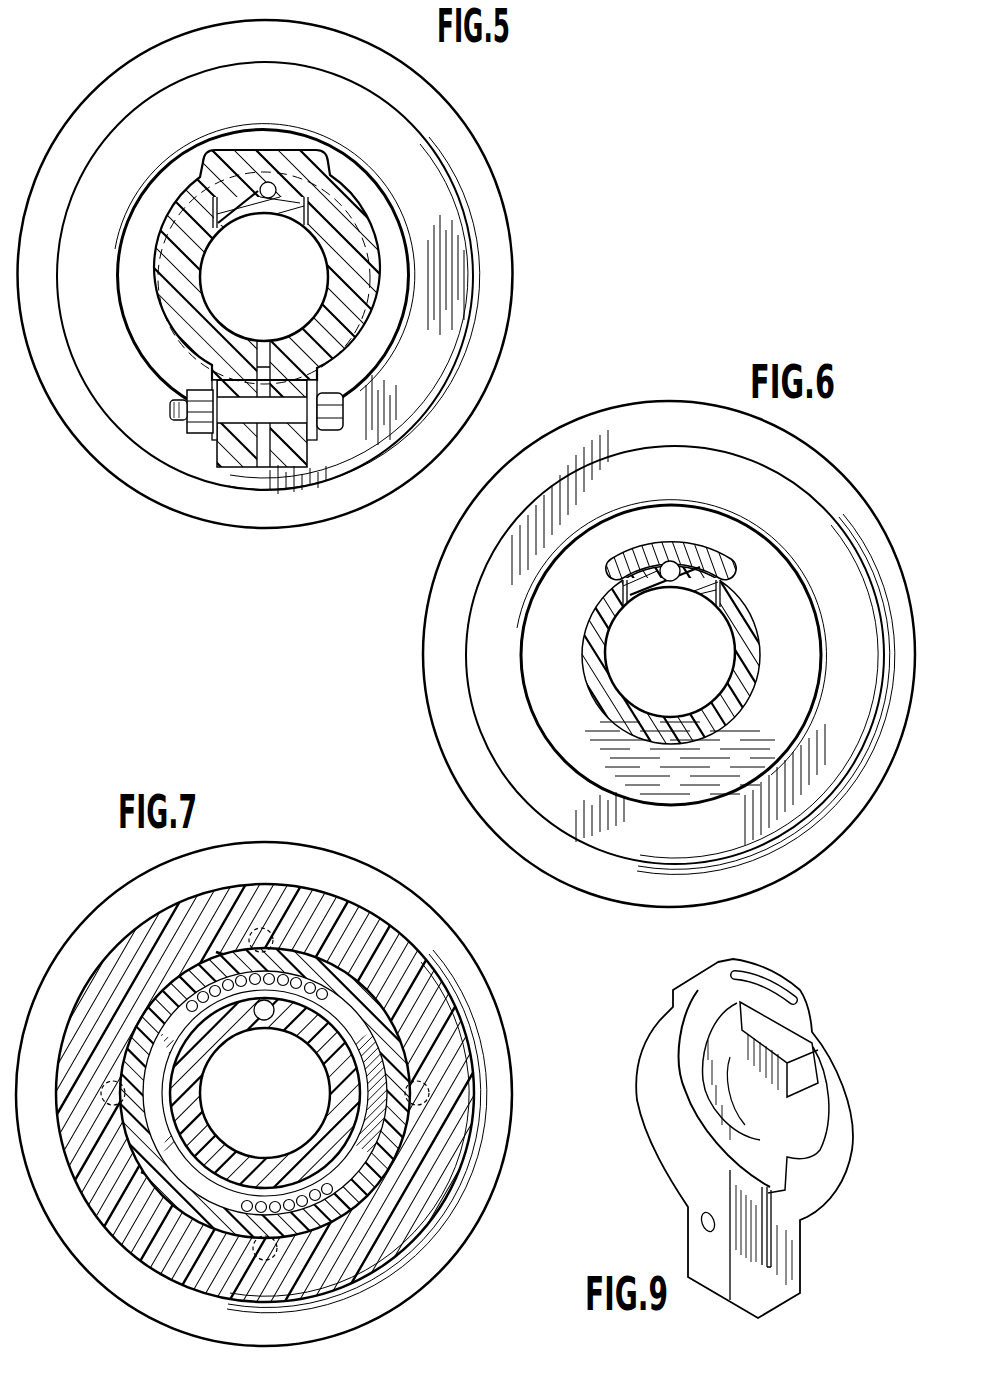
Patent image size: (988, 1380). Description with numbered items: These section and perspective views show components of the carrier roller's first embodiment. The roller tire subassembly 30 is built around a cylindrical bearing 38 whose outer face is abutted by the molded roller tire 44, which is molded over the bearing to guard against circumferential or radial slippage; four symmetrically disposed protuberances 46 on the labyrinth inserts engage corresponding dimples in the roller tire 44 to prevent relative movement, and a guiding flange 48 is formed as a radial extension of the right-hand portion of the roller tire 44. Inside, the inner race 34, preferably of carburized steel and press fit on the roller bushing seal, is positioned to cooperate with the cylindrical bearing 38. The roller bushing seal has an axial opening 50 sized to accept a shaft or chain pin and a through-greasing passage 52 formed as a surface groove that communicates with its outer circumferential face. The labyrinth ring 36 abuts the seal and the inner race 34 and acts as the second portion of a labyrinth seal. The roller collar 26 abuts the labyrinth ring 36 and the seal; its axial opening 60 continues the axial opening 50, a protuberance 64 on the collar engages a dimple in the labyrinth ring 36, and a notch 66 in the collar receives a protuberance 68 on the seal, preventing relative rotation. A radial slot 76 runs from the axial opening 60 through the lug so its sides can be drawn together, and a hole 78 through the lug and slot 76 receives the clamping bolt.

In FIG. 5, the roller collar 26 is at (205, 300).
In FIG. 6, the roller collar 26 is at (606, 678).
In FIG. 5, the roller tire subassembly 30 is at (117, 432).
In FIG. 6, the roller tire subassembly 30 is at (458, 625).
In FIG. 7, the inner race 34 is at (231, 1170).
In FIG. 5, the labyrinth ring 36 is at (130, 339).
In FIG. 6, the labyrinth ring 36 is at (566, 684).
In FIG. 7, the cylindrical bearing 38 is at (306, 1228).
In FIG. 7, the roller tire 44 is at (124, 964).
In FIG. 7, the protuberances 46 is at (262, 928).
In FIG. 5, the guiding flange 48 is at (108, 72).
In FIG. 6, the guiding flange 48 is at (426, 703).
In FIG. 7, the guiding flange 48 is at (264, 1094).
In FIG. 7, the axial opening 50 is at (304, 1042).
In FIG. 5, the through-greasing passage 52 is at (272, 184).
In FIG. 7, the through-greasing passage 52 is at (264, 1021).
In FIG. 9, the axial opening 60 is at (784, 1146).
In FIG. 6, the protuberance 64 is at (684, 541).
In FIG. 9, the protuberance 64 is at (783, 980).
In FIG. 6, the notch 66 is at (697, 587).
In FIG. 9, the notch 66 is at (814, 1040).
In FIG. 5, the protuberance 68 is at (278, 208).
In FIG. 6, the protuberance 68 is at (696, 592).
In FIG. 9, the radial slot 76 is at (771, 1243).
In FIG. 9, the hole 78 is at (702, 1222).